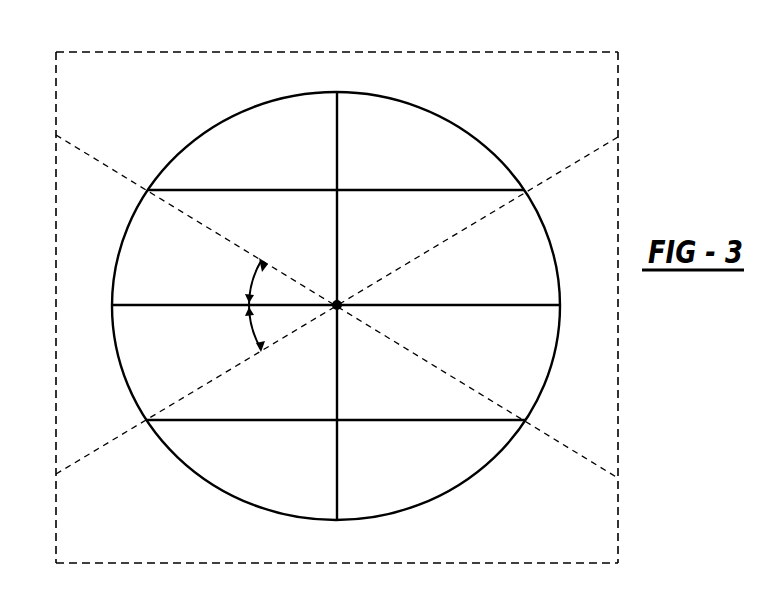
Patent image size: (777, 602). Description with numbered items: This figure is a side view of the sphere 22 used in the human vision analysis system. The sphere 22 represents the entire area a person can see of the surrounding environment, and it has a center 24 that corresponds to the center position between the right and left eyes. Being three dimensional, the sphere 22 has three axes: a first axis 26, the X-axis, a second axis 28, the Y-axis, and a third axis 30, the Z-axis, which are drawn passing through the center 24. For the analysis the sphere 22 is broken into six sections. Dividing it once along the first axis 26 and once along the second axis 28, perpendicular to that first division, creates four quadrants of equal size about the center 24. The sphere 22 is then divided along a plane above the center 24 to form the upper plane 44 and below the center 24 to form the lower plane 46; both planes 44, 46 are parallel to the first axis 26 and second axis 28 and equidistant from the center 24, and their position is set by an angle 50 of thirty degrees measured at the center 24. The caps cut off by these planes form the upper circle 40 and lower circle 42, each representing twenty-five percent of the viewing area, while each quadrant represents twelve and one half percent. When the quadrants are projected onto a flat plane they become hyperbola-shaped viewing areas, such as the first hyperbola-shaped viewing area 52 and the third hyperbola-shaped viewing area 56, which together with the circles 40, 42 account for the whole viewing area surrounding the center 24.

The sphere 22 is at (466, 132).
The center 24 is at (340, 305).
The first axis 26 is at (143, 306).
The second axis 28 is at (442, 305).
The third axis 30 is at (339, 141).
The upper circle 40 is at (175, 51).
The lower circle 42 is at (202, 563).
The upper plane 44 is at (222, 190).
The lower plane 46 is at (240, 420).
The angle 50 is at (249, 278).
The first hyperbola-shaped viewing area 52 is at (56, 237).
The third hyperbola-shaped viewing area 56 is at (618, 417).